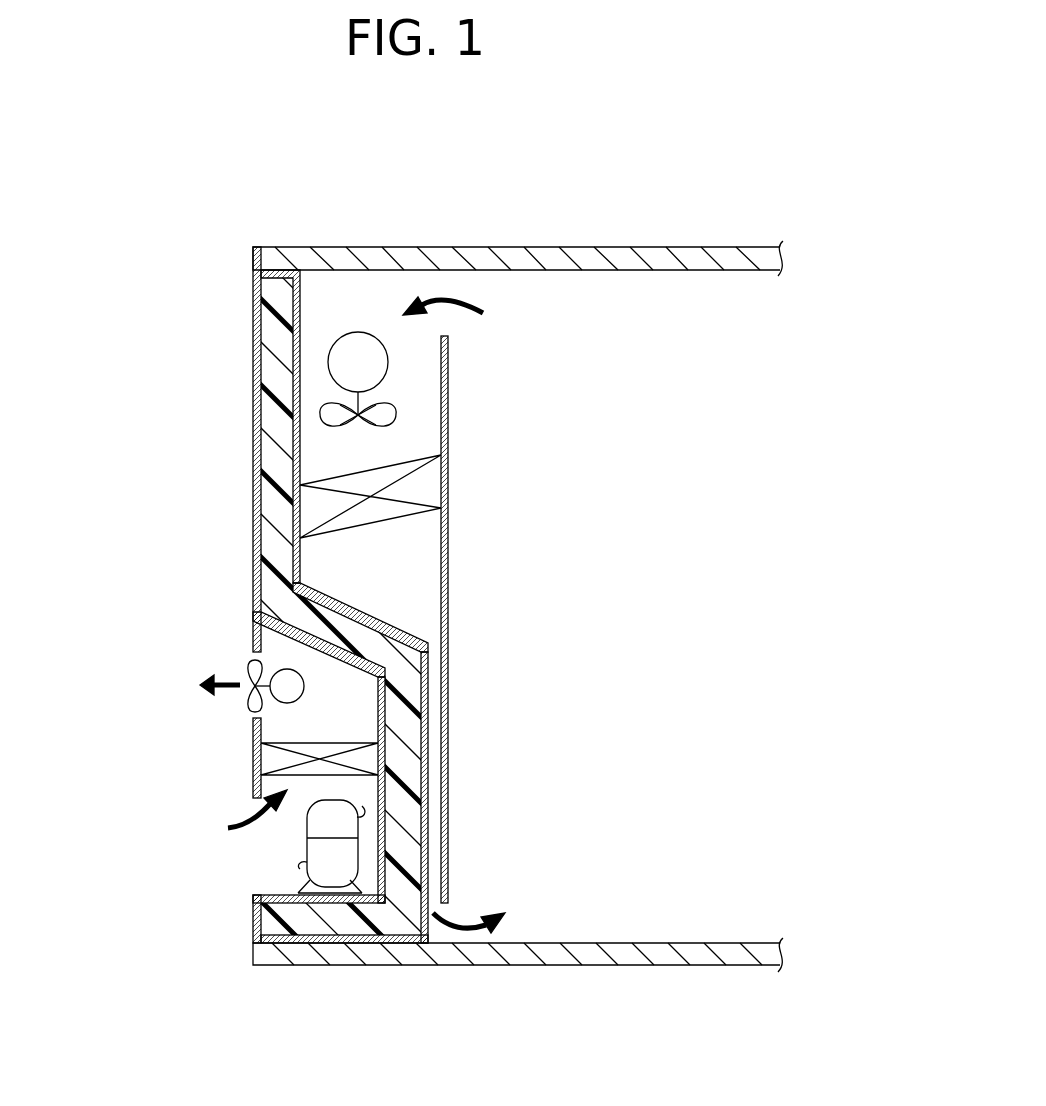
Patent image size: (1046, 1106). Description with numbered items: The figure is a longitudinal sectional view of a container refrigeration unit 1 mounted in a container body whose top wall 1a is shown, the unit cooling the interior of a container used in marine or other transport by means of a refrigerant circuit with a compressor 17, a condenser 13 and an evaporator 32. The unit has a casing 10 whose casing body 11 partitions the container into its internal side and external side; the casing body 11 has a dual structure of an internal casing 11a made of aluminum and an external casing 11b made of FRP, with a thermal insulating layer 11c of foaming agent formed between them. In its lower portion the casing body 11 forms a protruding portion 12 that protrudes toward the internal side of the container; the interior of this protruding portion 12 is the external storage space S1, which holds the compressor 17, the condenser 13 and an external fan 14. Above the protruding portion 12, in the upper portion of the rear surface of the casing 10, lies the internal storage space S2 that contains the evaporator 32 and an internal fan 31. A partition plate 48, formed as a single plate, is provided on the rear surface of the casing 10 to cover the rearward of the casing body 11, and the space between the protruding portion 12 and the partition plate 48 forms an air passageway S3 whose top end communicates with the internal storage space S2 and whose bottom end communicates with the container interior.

The container refrigeration unit 1 is at (417, 555).
The top wall of housing 1a is at (636, 248).
The casing 10 is at (353, 595).
The casing body 11 is at (369, 595).
The internal casing 11a is at (478, 483).
The external casing 11b is at (402, 606).
The thermal insulating layer 11c is at (420, 778).
The protruding portion 12 is at (322, 597).
The condenser 13 is at (322, 745).
The external fan 14 is at (247, 705).
The compressor 17 is at (307, 848).
The internal fan 31 is at (322, 413).
The evaporator 32 is at (392, 512).
The partition plate 48 is at (449, 382).
The external storage space S1 is at (282, 640).
The internal storage space S2 is at (362, 302).
The air passageway S3 is at (433, 703).